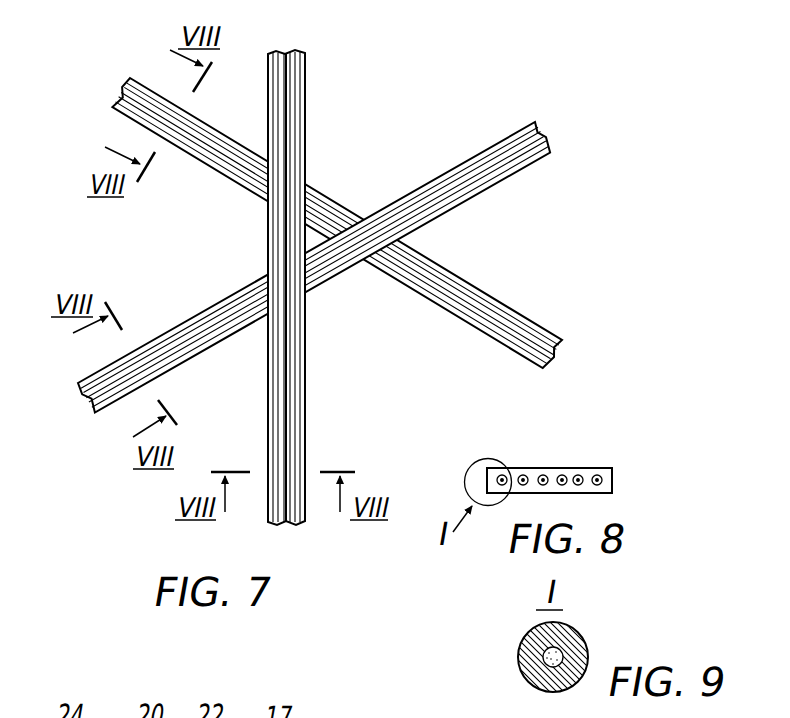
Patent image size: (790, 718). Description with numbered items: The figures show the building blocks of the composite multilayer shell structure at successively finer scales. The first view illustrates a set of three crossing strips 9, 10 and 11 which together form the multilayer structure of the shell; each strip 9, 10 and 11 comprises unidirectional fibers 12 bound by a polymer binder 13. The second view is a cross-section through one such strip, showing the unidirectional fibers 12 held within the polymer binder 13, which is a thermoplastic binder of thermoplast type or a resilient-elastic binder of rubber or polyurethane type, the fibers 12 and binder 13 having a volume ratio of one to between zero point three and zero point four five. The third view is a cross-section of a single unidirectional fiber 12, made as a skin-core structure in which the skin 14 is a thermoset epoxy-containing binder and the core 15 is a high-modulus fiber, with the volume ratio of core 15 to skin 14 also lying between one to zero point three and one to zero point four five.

In FIG. 7, the strip 9 is at (197, 322).
In FIG. 7, the strip 10 is at (235, 170).
In FIG. 7, the strip 11 is at (305, 348).
In FIG. 8, the unidirectional fiber 12 is at (612, 478).
In FIG. 8, the polymer binder 13 is at (589, 468).
In FIG. 9, the skin 14 is at (519, 648).
In FIG. 9, the core 15 is at (560, 649).